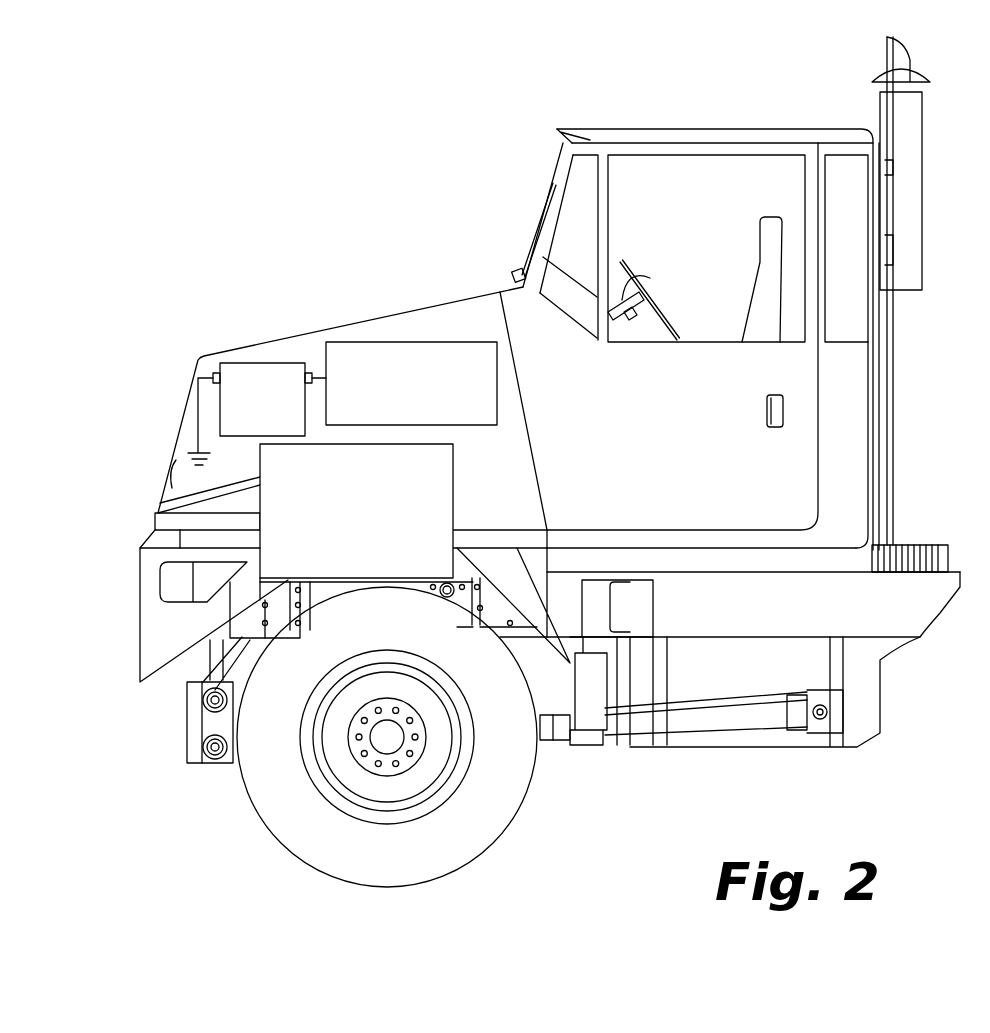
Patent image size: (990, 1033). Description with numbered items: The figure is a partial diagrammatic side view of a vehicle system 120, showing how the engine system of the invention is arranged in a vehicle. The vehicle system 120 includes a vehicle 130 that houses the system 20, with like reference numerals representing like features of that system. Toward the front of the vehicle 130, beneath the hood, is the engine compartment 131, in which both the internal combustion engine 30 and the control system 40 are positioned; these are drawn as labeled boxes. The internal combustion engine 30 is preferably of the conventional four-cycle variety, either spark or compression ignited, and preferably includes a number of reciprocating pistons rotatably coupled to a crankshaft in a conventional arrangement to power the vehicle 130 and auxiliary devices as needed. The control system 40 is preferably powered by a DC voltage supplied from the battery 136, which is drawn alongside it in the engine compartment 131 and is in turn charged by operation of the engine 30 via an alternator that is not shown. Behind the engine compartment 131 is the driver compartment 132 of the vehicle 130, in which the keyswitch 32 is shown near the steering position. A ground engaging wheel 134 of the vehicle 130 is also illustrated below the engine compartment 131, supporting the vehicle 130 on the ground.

The vehicle system 120 is at (233, 239).
The vehicle 130 is at (208, 342).
The engine compartment 131 is at (172, 488).
The system 20 is at (505, 445).
The battery 136 is at (277, 431).
The control system 40 is at (543, 383).
The internal combustion engine 30 is at (367, 572).
The keyswitch 32 is at (648, 285).
The driver compartment 132 is at (716, 265).
The ground engaging wheel 134 is at (527, 802).